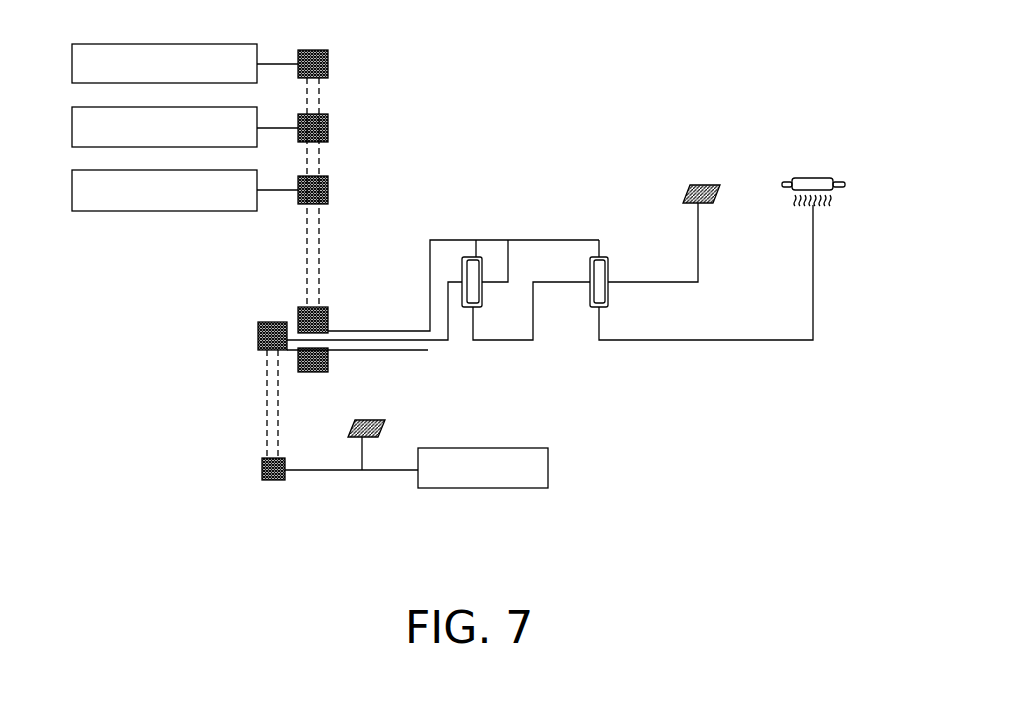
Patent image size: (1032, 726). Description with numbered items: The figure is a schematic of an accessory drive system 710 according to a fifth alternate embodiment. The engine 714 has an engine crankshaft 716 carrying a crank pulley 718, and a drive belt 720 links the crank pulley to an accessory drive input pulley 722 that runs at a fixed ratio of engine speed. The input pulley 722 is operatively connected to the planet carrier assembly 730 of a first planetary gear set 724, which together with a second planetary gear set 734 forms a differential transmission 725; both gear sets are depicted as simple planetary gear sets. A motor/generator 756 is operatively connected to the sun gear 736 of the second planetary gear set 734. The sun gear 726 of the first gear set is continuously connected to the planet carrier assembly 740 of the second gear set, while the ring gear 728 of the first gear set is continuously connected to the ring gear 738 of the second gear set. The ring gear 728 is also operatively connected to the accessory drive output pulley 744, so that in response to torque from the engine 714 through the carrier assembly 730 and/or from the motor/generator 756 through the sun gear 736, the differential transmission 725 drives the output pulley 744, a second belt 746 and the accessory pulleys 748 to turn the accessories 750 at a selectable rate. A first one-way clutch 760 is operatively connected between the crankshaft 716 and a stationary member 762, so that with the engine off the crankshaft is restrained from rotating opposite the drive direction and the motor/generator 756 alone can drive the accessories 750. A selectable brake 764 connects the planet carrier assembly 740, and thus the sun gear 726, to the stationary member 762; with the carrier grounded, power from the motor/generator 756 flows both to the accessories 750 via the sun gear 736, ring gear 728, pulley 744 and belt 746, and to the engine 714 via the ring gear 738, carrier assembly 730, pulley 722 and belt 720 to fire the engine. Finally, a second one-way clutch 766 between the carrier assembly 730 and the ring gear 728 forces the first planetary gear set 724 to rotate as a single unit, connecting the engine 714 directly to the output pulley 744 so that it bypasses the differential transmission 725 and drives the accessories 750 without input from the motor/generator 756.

The accessory drive system 710 is at (822, 72).
The engine 714 is at (518, 488).
The engine crankshaft 716 is at (317, 473).
The crank pulley 718 is at (262, 468).
The drive belt 720 is at (256, 403).
The accessory drive input pulley 722 is at (257, 336).
The first planetary gear set 724 is at (508, 308).
The differential transmission 725 is at (810, 427).
The sun gear 726 is at (470, 313).
The ring gear 728 is at (477, 253).
The planet carrier assembly 730 is at (487, 309).
The second planetary gear set 734 is at (640, 306).
The sun gear 736 is at (593, 313).
The ring gear 738 is at (600, 253).
The planet carrier assembly 740 is at (573, 281).
The accessory drive output pulley 744 is at (329, 322).
The second belt 746 is at (290, 246).
The accessory pulleys 748 is at (330, 64).
The accessories 750 is at (72, 64).
The motor/generator 756 is at (822, 168).
The first one-way clutch 760 is at (368, 446).
The stationary member 762 is at (375, 410).
The selectable brake 764 is at (703, 205).
The second one-way clutch 766 is at (509, 256).